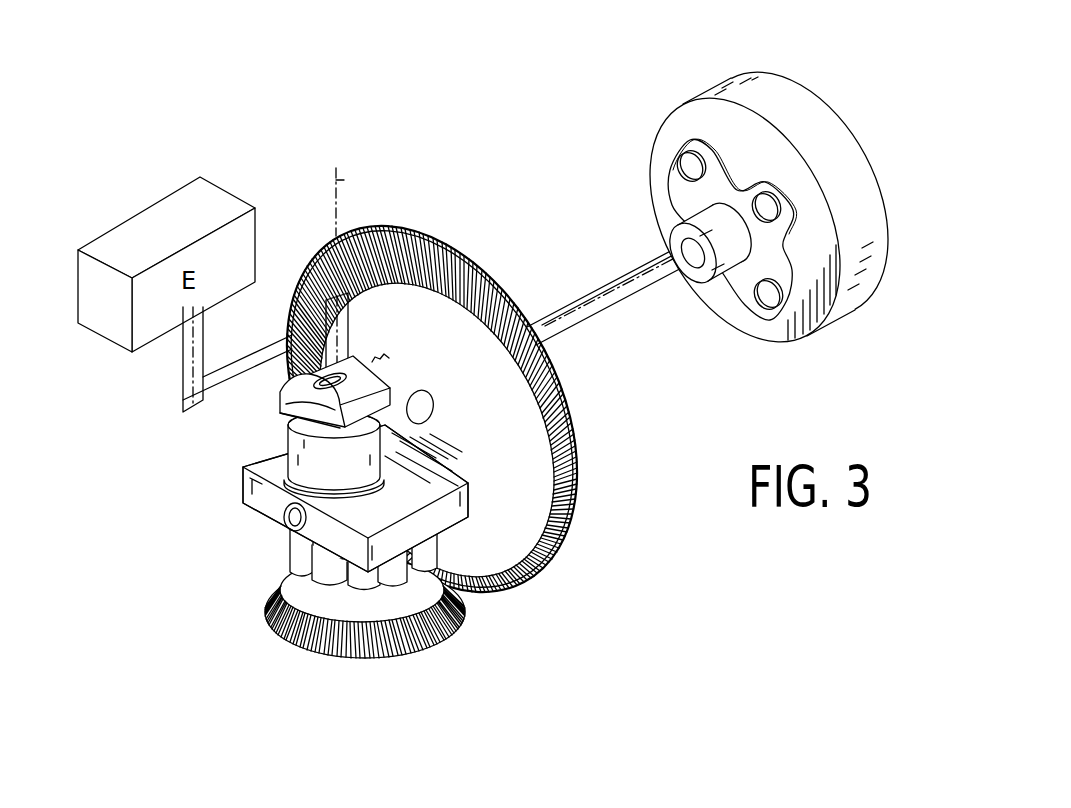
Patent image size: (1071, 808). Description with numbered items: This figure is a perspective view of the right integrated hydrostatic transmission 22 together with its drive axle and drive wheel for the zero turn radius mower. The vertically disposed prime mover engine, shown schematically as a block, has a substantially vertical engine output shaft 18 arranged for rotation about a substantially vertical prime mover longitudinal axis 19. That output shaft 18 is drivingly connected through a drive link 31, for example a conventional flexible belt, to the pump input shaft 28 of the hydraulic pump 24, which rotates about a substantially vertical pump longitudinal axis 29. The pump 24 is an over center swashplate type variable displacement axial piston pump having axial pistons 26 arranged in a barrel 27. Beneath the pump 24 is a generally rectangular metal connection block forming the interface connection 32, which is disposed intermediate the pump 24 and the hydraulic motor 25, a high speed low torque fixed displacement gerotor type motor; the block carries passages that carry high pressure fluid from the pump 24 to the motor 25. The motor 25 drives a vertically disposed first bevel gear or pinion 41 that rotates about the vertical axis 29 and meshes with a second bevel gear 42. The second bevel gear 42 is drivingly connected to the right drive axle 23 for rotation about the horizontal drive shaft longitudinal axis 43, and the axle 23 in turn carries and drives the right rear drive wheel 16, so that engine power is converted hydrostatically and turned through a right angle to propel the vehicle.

The right rear drive wheel 16 is at (806, 102).
The engine output shaft 18 is at (183, 368).
The prime mover longitudinal axis 19 is at (183, 398).
The right integrated hydrostatic transmission 22 is at (135, 484).
The right drive axle 23 is at (600, 315).
The hydraulic pump 24 is at (278, 422).
The hydraulic motor 25 is at (267, 606).
The axial pistons 26 is at (424, 443).
The barrel 27 is at (379, 455).
The pump input shaft 28 is at (349, 332).
The pump longitudinal axis 29 is at (344, 182).
The drive link 31 is at (253, 350).
The interface connection 32 is at (243, 505).
The first bevel gear or pinion 41 is at (440, 630).
The second bevel gear 42 is at (572, 490).
The drive shaft longitudinal axis 43 is at (622, 286).